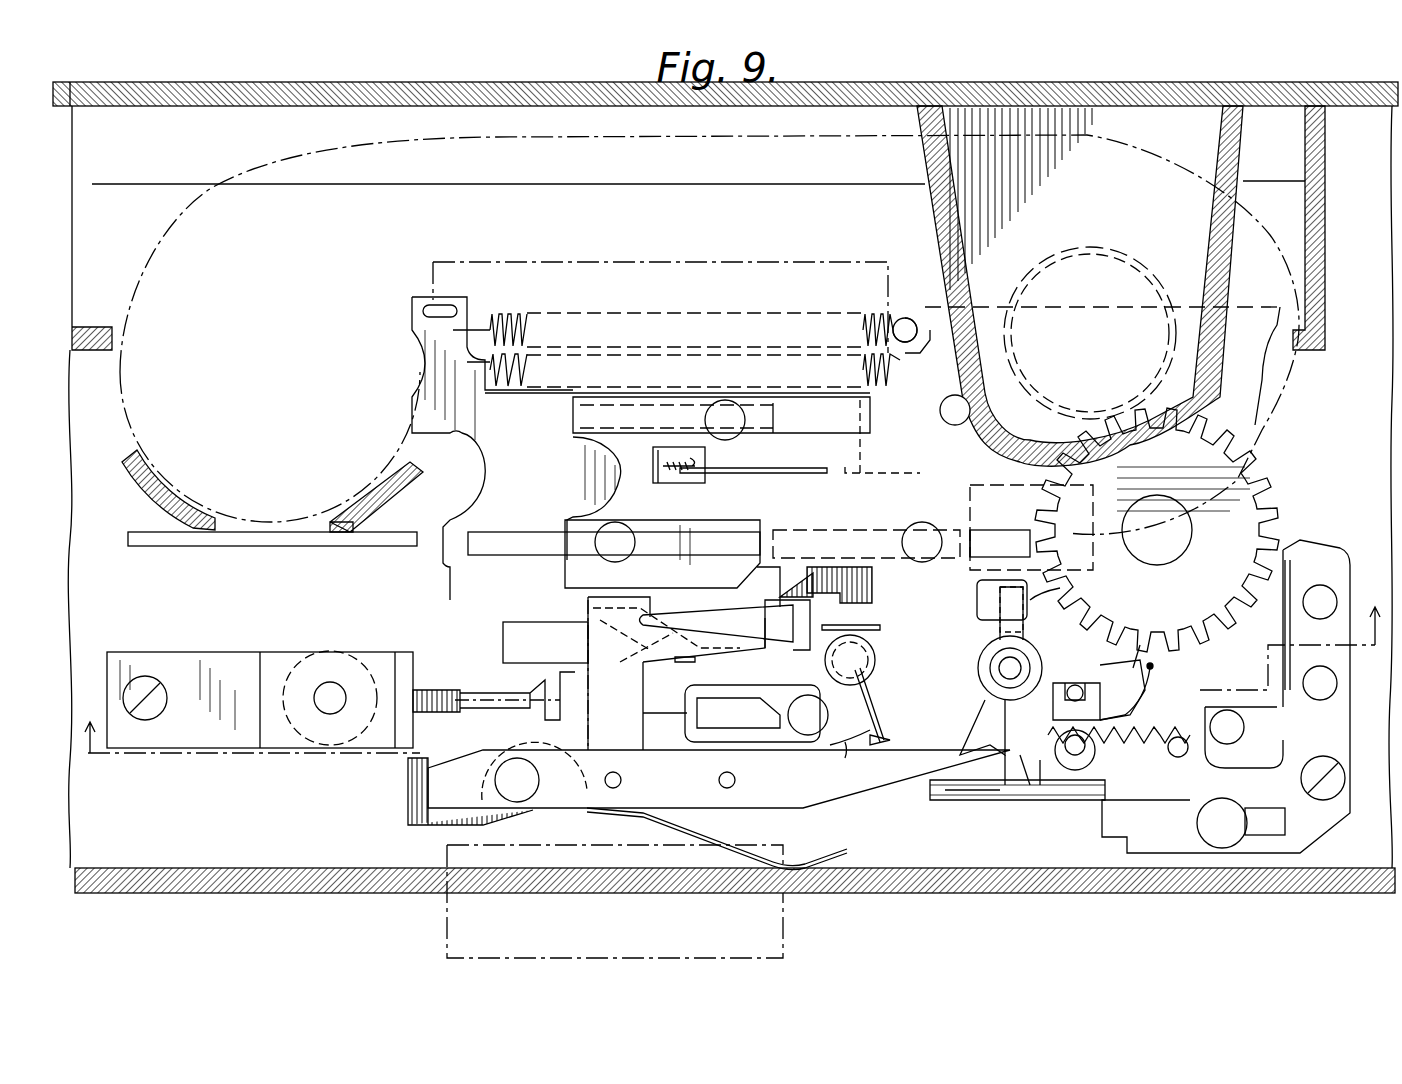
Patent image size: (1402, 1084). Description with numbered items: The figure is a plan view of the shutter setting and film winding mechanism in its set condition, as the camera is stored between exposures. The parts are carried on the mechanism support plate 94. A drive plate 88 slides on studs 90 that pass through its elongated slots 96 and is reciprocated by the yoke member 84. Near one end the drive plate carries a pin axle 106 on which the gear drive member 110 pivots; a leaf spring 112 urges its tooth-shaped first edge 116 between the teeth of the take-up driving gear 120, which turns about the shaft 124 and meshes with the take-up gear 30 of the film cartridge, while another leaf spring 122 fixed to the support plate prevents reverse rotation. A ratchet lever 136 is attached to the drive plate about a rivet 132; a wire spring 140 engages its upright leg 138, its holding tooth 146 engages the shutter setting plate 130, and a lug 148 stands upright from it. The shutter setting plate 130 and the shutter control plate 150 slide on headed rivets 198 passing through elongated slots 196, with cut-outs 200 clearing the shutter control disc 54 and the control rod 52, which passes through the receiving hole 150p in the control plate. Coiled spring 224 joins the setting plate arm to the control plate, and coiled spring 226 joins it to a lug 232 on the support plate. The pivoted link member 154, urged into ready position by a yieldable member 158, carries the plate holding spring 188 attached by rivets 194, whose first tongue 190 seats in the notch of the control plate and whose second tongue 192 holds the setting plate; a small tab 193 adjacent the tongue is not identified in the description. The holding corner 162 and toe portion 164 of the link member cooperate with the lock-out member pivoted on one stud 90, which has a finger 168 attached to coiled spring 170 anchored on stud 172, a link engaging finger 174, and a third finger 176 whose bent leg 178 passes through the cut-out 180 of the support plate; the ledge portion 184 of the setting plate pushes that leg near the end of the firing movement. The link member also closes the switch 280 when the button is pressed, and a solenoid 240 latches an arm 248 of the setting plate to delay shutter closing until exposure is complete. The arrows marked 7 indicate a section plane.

The take-up gear 30 is at (1094, 366).
The shutter setting plate 130 is at (520, 478).
The coiled spring 226 is at (614, 323).
The coiled spring 224 is at (783, 353).
The lug 232 is at (913, 318).
The shutter control plate 150 is at (665, 519).
The receiving hole 150p is at (843, 468).
The headed rivets 198 is at (722, 400).
The shutter control disc 54 is at (652, 452).
The cut-outs 200 is at (665, 478).
The control rod 52 is at (760, 477).
The elongated slots 196 is at (527, 540).
The second tongue 192 is at (800, 572).
The cut-out 180 is at (985, 555).
The first tongue 190 is at (763, 567).
The tab 193 is at (790, 600).
The ledge portion 184 is at (875, 590).
The yoke member 84 is at (845, 625).
The rivet 132 is at (870, 653).
The upright leg 138 is at (888, 745).
The ratchet lever 136 is at (742, 660).
The shutter setting plate holding tooth 146 is at (655, 640).
The lug 148 is at (688, 662).
The plate holding spring member 188 is at (592, 647).
The arm 248 is at (515, 685).
The elongated slots 96 is at (710, 742).
The studs 90 is at (810, 705).
The drive plate 88 is at (830, 745).
The wire spring 140 is at (845, 760).
The link member 154 is at (805, 800).
The yieldable member 158 is at (705, 838).
The holding corner 162 is at (935, 780).
The actuator control operated switch 280 is at (944, 800).
The toe portion 164 is at (1010, 780).
The rivets 194 is at (1042, 780).
The finger 168 is at (1030, 790).
The link engaging finger 174 is at (972, 732).
The third finger 176 is at (982, 606).
The leg 178 is at (1062, 590).
The pin axle 106 is at (1073, 688).
The gear drive member 110 is at (1110, 658).
The leaf spring 112 is at (1153, 670).
The first edge 116 is at (1133, 668).
The coiled spring member 170 is at (1119, 745).
The stud 172 is at (1268, 733).
The take-up driving gear 120 is at (1182, 583).
The shaft 124 is at (1192, 530).
The mechanism support plate 94 is at (1295, 540).
The leaf spring 122 is at (1290, 565).
The section line 7- 7 is at (732, 694).
The solenoid 240 is at (318, 655).